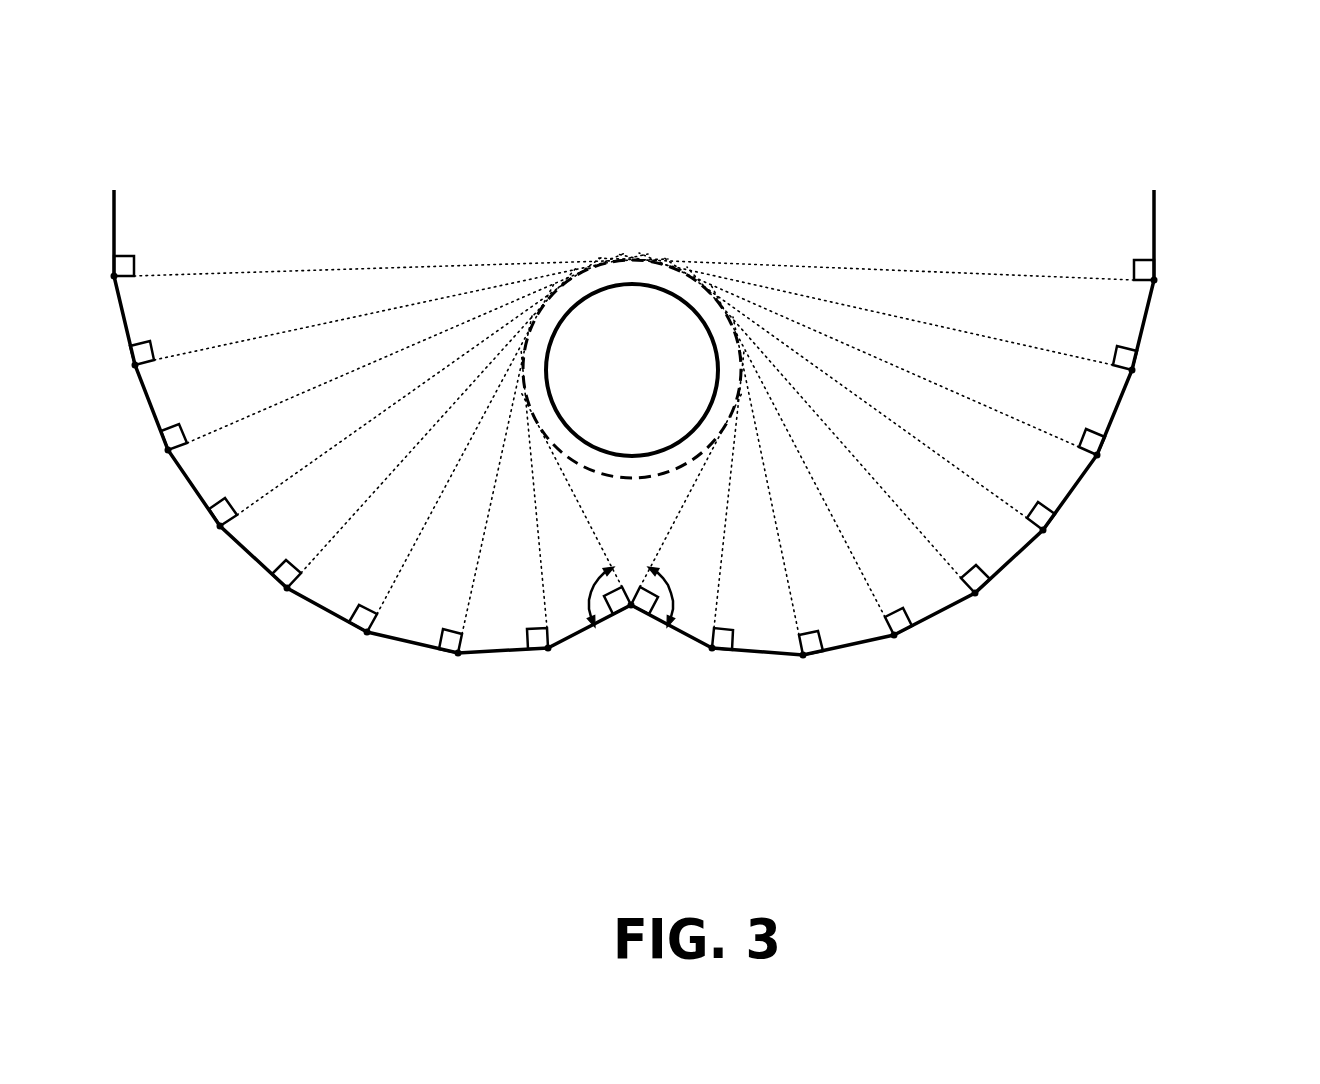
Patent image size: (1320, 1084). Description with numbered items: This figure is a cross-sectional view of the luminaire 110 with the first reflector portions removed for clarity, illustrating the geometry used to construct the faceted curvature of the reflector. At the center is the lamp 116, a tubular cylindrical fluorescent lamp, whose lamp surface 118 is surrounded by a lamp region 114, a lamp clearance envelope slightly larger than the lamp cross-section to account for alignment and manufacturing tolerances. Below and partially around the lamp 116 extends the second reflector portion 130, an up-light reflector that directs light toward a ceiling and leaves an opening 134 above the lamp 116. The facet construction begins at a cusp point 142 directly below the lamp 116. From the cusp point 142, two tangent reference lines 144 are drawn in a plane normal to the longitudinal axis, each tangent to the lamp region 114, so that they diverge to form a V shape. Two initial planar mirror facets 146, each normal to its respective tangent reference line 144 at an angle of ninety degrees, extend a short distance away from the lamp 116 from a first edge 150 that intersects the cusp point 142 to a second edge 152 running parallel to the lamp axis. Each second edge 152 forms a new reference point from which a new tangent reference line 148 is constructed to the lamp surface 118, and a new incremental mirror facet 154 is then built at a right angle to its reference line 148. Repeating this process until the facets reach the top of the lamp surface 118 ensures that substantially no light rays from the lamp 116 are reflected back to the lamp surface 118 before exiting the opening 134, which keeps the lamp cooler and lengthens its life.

The luminaire 110 is at (1089, 116).
The lamp region 114 is at (702, 284).
The lamp 116 is at (614, 372).
The lamp surface 118 is at (662, 285).
The second reflector portion 130 is at (1168, 350).
The opening 134 is at (232, 212).
The cusp point 142 is at (633, 621).
The tangent reference line 144 is at (563, 470).
The initial planar mirror facet 146 is at (577, 638).
The new tangent reference line 148 is at (537, 545).
The first edge 150 is at (631, 598).
The second edge 152 is at (530, 625).
The incremental mirror facet 154 is at (487, 656).